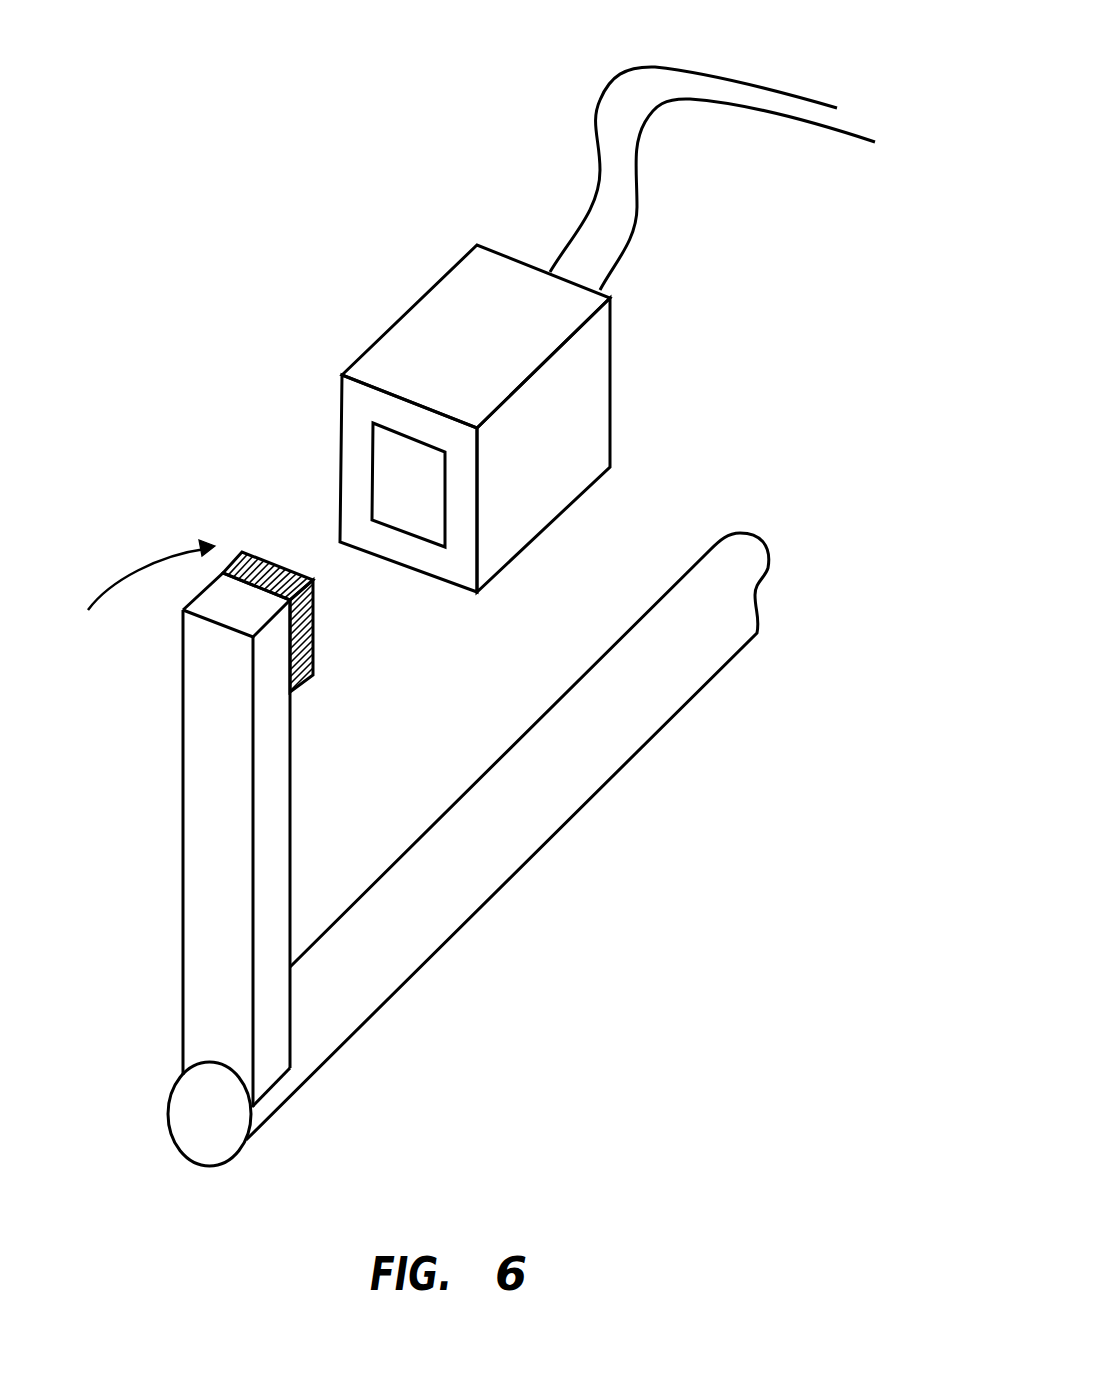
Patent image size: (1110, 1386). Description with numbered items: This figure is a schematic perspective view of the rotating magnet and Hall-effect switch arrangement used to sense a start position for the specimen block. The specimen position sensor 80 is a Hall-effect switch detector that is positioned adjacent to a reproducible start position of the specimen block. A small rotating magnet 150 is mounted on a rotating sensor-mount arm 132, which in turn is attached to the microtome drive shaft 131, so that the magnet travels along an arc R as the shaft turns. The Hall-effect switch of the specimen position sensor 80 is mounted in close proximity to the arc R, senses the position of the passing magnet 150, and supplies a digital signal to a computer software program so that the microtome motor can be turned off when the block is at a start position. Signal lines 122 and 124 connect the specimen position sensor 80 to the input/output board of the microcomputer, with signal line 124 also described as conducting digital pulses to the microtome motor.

The specimen position sensor 80 is at (397, 325).
The signal line 122 is at (770, 88).
The signal line 124 is at (723, 110).
The rotating magnet 150 is at (265, 553).
The sensor-mount arm 132 is at (225, 958).
The microtome drive shaft 131 is at (478, 848).
The arc of the rotating magnet R is at (130, 567).